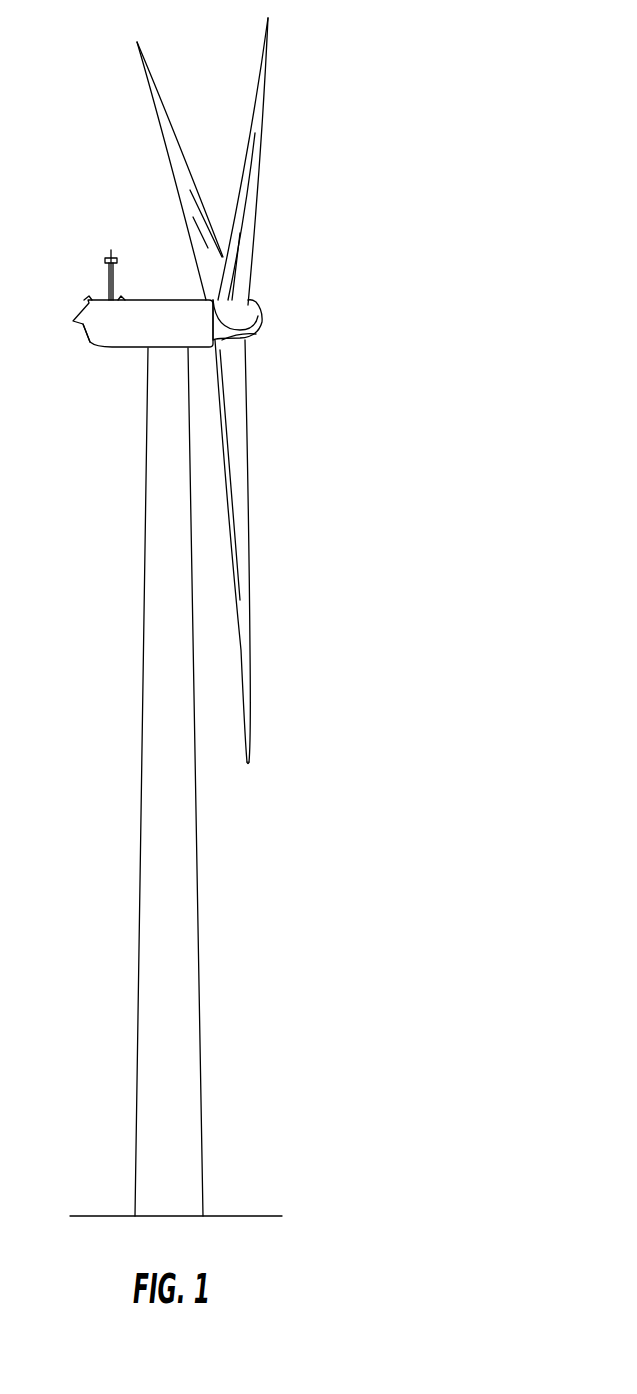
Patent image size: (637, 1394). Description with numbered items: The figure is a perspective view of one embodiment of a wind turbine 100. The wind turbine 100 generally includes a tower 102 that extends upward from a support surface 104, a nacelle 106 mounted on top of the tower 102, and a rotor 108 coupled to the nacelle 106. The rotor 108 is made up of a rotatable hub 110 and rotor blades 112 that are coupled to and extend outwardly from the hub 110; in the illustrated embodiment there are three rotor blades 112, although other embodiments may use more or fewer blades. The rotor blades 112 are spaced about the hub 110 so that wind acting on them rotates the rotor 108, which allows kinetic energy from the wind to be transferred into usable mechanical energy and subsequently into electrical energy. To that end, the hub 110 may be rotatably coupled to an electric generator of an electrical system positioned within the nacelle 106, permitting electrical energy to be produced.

The wind turbine 100 is at (392, 128).
The tower 102 is at (180, 853).
The support surface 104 is at (243, 1216).
The nacelle 106 is at (118, 350).
The rotor 108 is at (300, 276).
The rotatable hub 110 is at (258, 314).
The rotor blade 112 is at (252, 135).